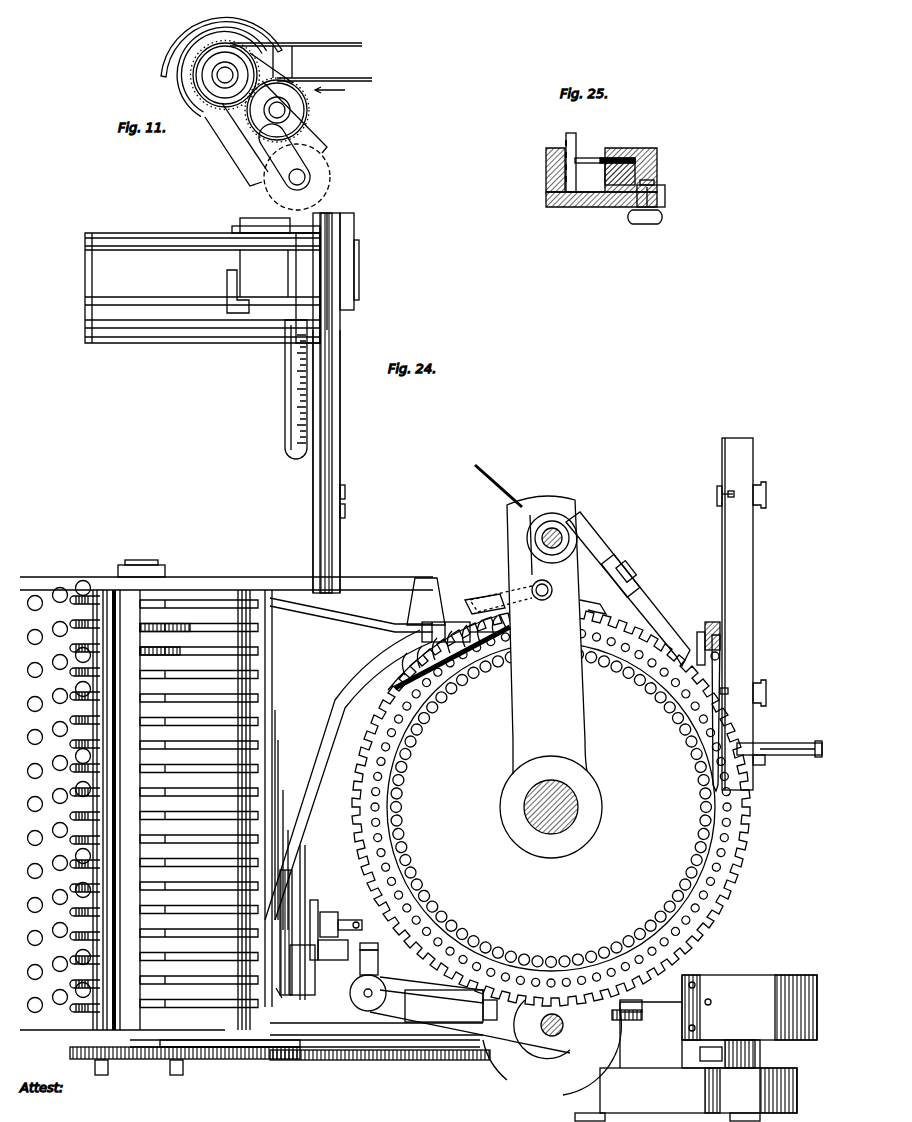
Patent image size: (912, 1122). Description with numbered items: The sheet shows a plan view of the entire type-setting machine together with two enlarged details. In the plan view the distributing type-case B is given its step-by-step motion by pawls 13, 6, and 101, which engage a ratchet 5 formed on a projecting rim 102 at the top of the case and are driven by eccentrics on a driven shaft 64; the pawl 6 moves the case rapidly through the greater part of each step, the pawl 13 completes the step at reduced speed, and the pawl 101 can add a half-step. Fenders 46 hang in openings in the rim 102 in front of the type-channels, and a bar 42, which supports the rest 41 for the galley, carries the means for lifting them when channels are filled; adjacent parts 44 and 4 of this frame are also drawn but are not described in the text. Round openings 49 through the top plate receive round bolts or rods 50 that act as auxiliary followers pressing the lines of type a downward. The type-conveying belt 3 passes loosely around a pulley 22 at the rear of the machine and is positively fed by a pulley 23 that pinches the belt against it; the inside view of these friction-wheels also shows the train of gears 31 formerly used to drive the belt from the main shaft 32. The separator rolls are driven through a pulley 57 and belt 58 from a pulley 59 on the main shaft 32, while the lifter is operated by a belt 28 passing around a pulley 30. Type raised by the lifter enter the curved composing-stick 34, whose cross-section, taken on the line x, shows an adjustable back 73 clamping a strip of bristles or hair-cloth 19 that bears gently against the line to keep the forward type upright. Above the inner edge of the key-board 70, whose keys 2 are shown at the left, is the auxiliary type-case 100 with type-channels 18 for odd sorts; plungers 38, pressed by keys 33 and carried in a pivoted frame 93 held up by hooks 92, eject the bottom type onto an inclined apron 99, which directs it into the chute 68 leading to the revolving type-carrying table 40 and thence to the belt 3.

In FIG. 24, the keys 2 is at (36, 630).
In FIG. 11, the type-conveying belt 3 is at (180, 90).
In FIG. 24, the type-conveying belt 3 is at (696, 1048).
In FIG. 24, the handle 4 is at (779, 755).
In FIG. 24, the ratchet 5 is at (352, 832).
In FIG. 24, the pawl 6 is at (600, 612).
In FIG. 24, the pawl 13 is at (672, 640).
In FIG. 24, the type-channels 18 is at (208, 727).
In FIG. 25, the row of bristles or strip of hair-cloth 19 is at (590, 158).
In FIG. 24, the row of bristles or strip of hair-cloth 19 is at (332, 436).
In FIG. 11, the pulley 22 is at (200, 65).
In FIG. 11, the pulley 23 is at (306, 110).
In FIG. 24, the belt 28 is at (330, 918).
In FIG. 24, the pulley 30 is at (360, 916).
In FIG. 11, the train of gears 31 is at (215, 97).
In FIG. 24, the main shaft 32 is at (556, 1030).
In FIG. 24, the keys or handles 33 is at (72, 652).
In FIG. 25, the composing-stick 34 is at (546, 186).
In FIG. 24, the composing-stick 34 is at (313, 478).
In FIG. 24, the plungers 38 is at (96, 677).
In FIG. 24, the revolving type-carrying table 40 is at (449, 652).
In FIG. 24, the rest 41 is at (741, 614).
In FIG. 24, the bar 42 is at (712, 622).
In FIG. 24, the lever 44 is at (714, 700).
In FIG. 24, the fenders 46 is at (648, 670).
In FIG. 24, the round openings 49 is at (690, 766).
In FIG. 24, the round bolts or rods (auxiliary followers) 50 is at (676, 740).
In FIG. 24, the pulley 57 is at (526, 1025).
In FIG. 24, the belt 58 is at (368, 977).
In FIG. 24, the pulley 59 is at (394, 986).
In FIG. 24, the driven shaft 64 is at (562, 536).
In FIG. 24, the chute 68 is at (448, 630).
In FIG. 24, the key-board 70 is at (46, 803).
In FIG. 25, the adjustable back 73 is at (660, 170).
In FIG. 24, the adjustable back 73 is at (340, 478).
In FIG. 24, the hooks 92 is at (184, 1040).
In FIG. 24, the pivoted frame 93 is at (226, 795).
In FIG. 24, the apron 99 is at (355, 749).
In FIG. 24, the auxiliary type-case 100 is at (262, 670).
In FIG. 24, the pawl 101 is at (474, 600).
In FIG. 24, the projecting rim 102 is at (700, 920).
In FIG. 25, the type a is at (569, 134).
In FIG. 24, the type a is at (322, 400).
In FIG. 24, the section line x is at (313, 510).
In FIG. 24, the distributing type-case B is at (566, 677).